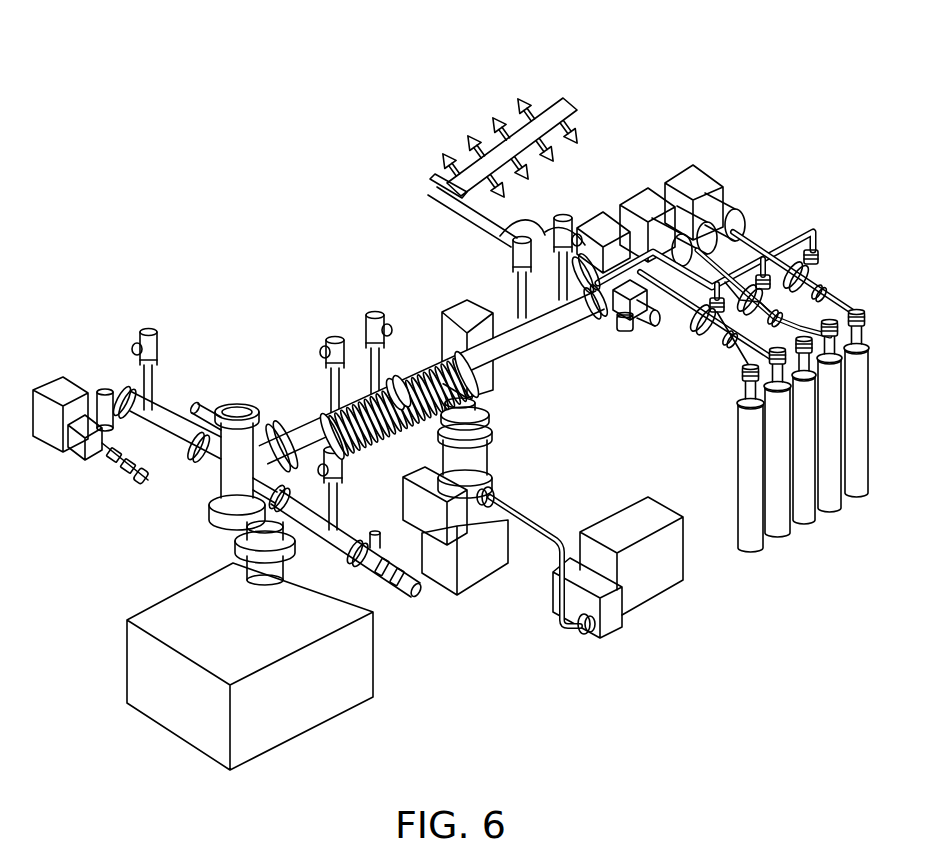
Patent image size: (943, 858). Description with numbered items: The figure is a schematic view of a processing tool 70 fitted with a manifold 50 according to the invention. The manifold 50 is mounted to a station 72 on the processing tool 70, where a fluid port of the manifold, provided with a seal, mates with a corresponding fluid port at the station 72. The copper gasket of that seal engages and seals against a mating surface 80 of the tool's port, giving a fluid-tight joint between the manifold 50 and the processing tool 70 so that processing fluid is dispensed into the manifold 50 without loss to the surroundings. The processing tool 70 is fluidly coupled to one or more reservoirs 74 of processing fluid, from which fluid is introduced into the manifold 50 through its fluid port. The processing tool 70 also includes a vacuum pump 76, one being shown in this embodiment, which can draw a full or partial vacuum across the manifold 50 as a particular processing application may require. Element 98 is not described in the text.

The manifold 50 is at (546, 86).
The mating surface 80 is at (427, 171).
The mounting plate 98 is at (440, 199).
The station 72 is at (521, 237).
The processing tool 70 is at (215, 268).
The reservoirs 74 is at (823, 513).
The vacuum pump 76 is at (607, 620).